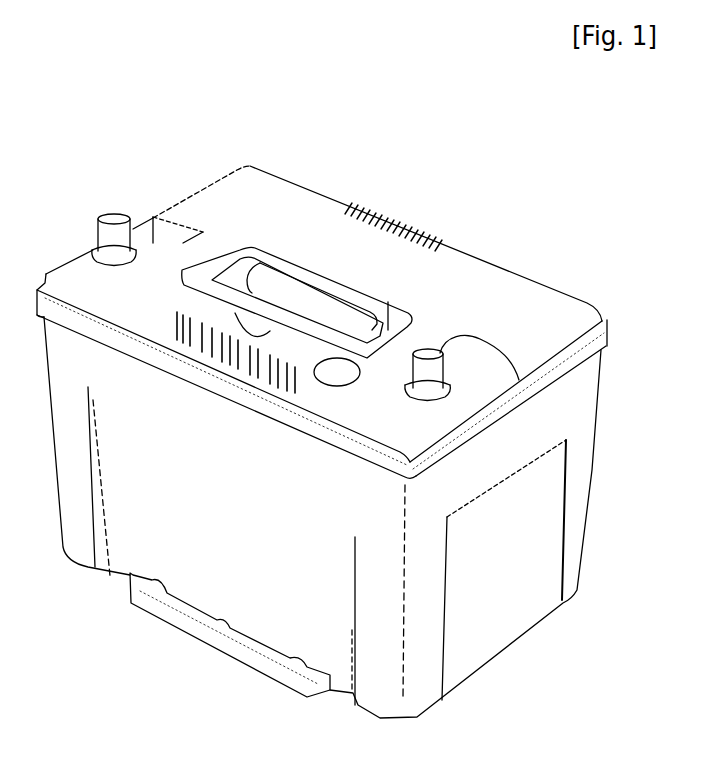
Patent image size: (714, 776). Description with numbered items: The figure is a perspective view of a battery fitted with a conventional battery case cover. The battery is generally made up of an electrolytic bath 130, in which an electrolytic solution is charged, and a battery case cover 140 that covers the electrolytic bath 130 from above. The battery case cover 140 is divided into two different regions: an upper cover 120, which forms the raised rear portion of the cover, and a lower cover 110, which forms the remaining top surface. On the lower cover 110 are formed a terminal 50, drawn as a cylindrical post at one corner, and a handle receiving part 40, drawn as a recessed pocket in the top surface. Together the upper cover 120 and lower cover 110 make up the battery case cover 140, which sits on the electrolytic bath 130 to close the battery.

The handle receiving part 40 is at (388, 304).
The terminal 50 is at (110, 212).
The lower cover 110 is at (153, 217).
The upper cover 120 is at (275, 195).
The electrolytic bath 130 is at (503, 600).
The battery case cover 140 is at (308, 104).